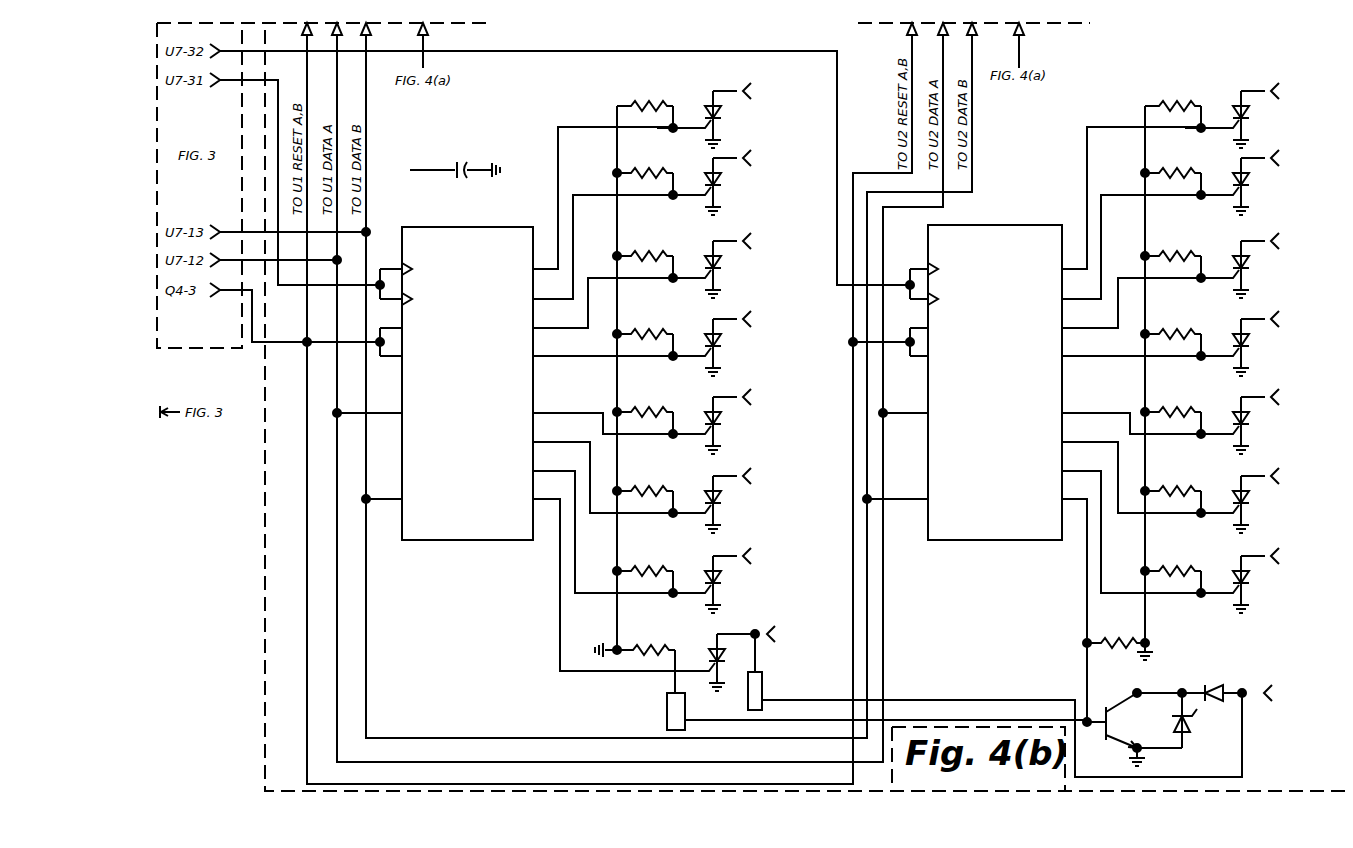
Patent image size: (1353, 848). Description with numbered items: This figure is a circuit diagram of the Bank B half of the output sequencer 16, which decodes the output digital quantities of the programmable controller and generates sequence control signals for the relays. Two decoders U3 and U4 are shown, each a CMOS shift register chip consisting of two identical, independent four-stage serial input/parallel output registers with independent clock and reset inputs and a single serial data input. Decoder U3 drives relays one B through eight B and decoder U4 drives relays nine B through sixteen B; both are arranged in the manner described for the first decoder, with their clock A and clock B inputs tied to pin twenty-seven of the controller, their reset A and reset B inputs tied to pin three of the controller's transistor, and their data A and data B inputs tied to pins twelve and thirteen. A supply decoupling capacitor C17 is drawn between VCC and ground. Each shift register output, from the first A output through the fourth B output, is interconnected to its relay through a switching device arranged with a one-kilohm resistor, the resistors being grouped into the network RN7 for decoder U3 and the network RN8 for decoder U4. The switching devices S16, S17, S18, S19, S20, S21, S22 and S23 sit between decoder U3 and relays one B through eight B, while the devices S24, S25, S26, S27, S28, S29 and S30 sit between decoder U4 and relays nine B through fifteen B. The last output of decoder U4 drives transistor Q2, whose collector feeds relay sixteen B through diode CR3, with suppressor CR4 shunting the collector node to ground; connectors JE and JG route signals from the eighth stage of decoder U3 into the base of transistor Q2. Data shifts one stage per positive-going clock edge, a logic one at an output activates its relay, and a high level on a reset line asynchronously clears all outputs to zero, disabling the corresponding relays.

The output sequencer 16 is at (590, 45).
The decoder U3 is at (467, 383).
The decoder U4 is at (995, 382).
The capacitor .1 uF C17 is at (442, 160).
The resistor network 1K RN7 is at (646, 371).
The resistor network 1K RN8 is at (1145, 376).
The SCR switch relay 1B S16 is at (716, 115).
The SCR switch relay 2B S17 is at (716, 182).
The SCR switch relay 3B S18 is at (716, 265).
The SCR switch relay 4B S19 is at (716, 343).
The SCR switch relay 5B S20 is at (716, 421).
The SCR switch relay 6B S21 is at (716, 500).
The SCR switch relay 7B S22 is at (716, 580).
The SCR switch relay 8B S23 is at (722, 647).
The SCR switch relay 9B S24 is at (1244, 115).
The SCR switch relay 10B S25 is at (1248, 182).
The SCR switch relay 11B S26 is at (1248, 265).
The SCR switch relay 12B S27 is at (1248, 343).
The SCR switch relay 13B S28 is at (1248, 421).
The SCR switch relay 14B S29 is at (1248, 500).
The SCR switch relay 15B S30 is at (1248, 580).
The connector JE is at (862, 710).
The connector JG is at (979, 705).
The transistor Q2 is at (1114, 727).
The diode 1N4002 CR3 is at (1218, 677).
The transient suppressor P6KE56A CR4 is at (1192, 722).